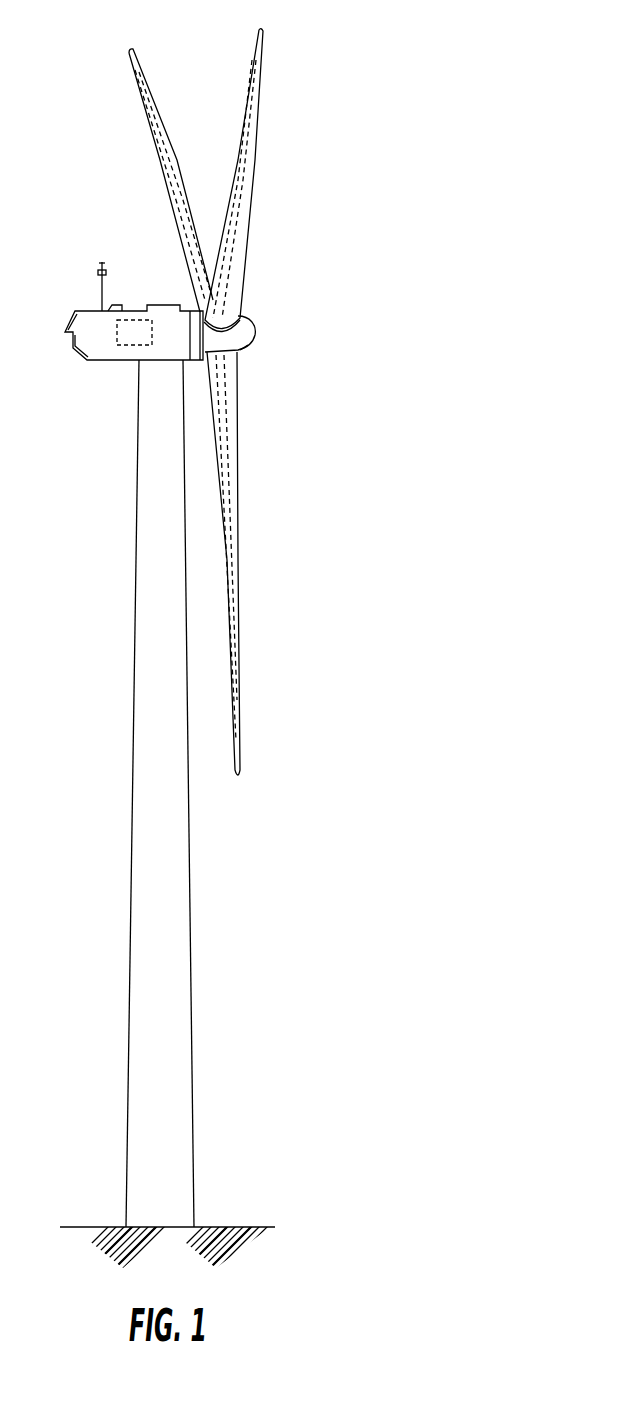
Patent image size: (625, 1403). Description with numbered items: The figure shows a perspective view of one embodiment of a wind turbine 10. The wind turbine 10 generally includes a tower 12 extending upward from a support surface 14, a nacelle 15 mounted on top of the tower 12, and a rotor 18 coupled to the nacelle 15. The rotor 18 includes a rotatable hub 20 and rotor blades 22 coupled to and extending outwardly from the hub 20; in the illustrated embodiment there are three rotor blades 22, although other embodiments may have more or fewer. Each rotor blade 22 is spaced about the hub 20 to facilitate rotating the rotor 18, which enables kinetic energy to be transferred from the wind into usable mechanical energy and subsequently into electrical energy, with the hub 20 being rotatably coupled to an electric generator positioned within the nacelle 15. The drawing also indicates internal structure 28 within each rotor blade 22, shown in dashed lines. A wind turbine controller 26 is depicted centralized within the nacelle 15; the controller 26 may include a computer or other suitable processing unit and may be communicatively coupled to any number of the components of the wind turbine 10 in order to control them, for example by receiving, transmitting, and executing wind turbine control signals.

The wind turbine 10 is at (400, 125).
The tower 12 is at (172, 865).
The support surface 14 is at (104, 1227).
The nacelle 15 is at (108, 361).
The rotor 18 is at (300, 284).
The rotatable hub 20 is at (258, 330).
The rotor blade 22 is at (240, 150).
The wind turbine controller 26 is at (124, 318).
The blade internal structure / spar 28 is at (168, 200).